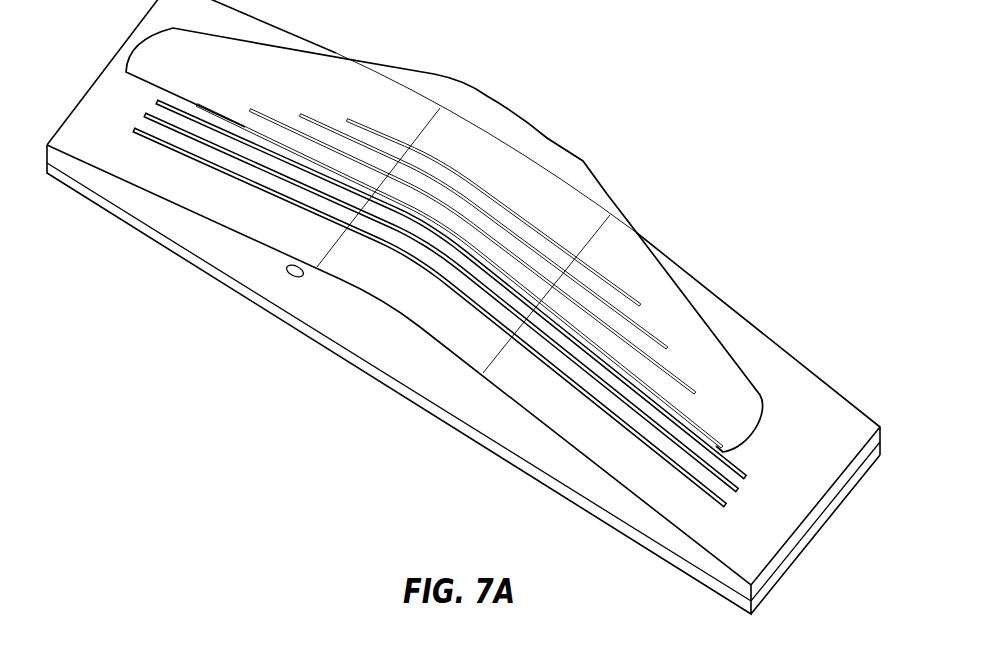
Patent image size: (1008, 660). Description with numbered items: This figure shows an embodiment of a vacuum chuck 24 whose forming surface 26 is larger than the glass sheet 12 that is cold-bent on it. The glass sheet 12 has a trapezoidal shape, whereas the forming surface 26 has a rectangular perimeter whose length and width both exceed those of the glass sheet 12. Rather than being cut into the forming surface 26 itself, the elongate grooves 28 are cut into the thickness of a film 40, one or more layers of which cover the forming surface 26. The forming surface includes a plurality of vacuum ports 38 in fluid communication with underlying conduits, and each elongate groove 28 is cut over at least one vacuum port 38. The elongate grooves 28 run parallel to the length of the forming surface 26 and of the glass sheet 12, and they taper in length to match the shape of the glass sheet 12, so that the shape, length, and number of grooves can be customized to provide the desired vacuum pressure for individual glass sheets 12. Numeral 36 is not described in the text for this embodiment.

The glass sheet 12 is at (603, 187).
The vacuum chuck 24 is at (420, 365).
The forming surface 26 is at (779, 388).
The elongate grooves 28 is at (237, 178).
The outlet port 36 is at (292, 283).
The vacuum ports 38 is at (317, 227).
The film 40 is at (633, 472).